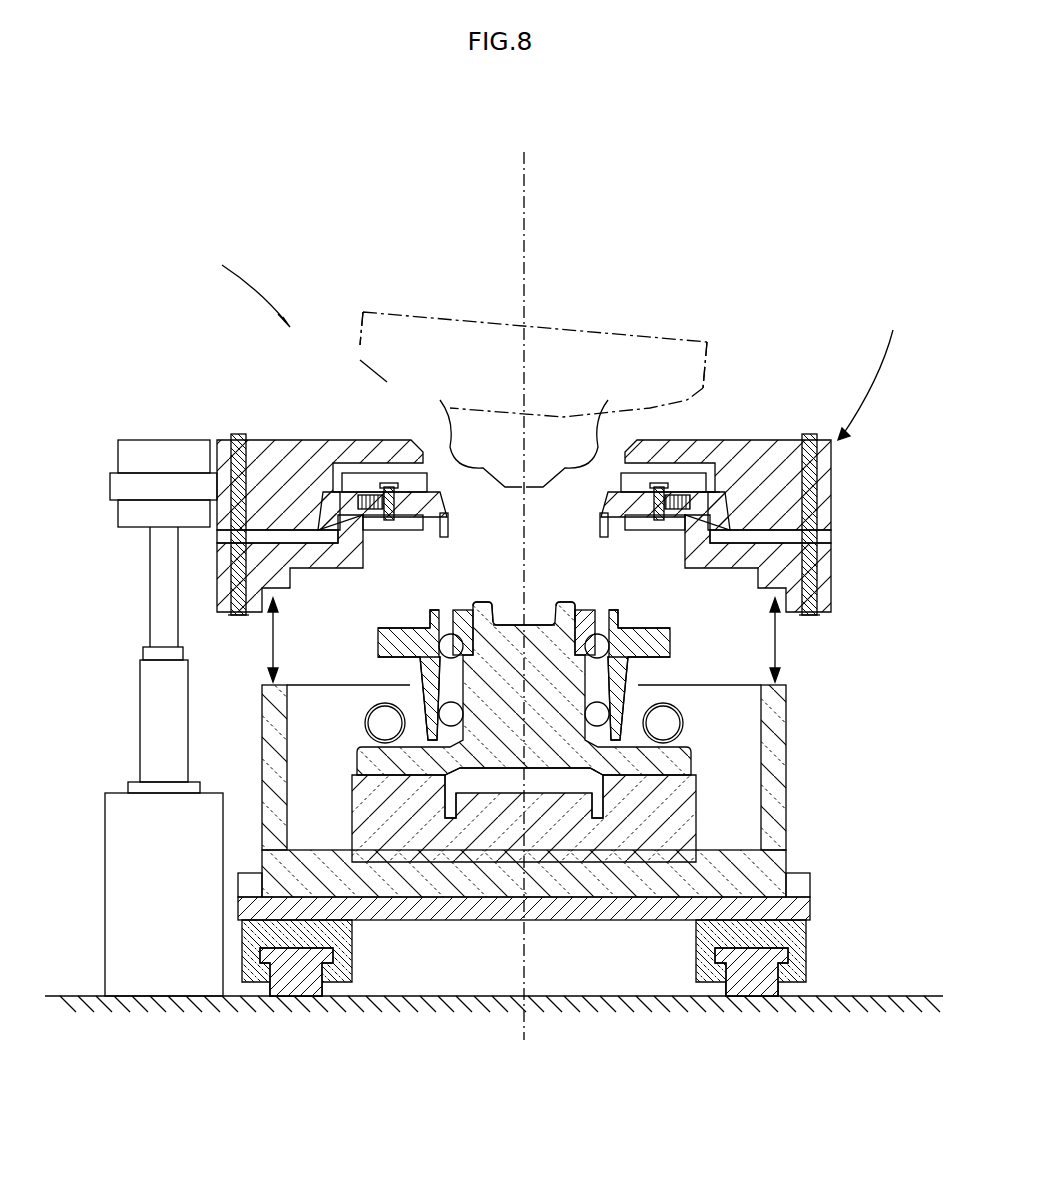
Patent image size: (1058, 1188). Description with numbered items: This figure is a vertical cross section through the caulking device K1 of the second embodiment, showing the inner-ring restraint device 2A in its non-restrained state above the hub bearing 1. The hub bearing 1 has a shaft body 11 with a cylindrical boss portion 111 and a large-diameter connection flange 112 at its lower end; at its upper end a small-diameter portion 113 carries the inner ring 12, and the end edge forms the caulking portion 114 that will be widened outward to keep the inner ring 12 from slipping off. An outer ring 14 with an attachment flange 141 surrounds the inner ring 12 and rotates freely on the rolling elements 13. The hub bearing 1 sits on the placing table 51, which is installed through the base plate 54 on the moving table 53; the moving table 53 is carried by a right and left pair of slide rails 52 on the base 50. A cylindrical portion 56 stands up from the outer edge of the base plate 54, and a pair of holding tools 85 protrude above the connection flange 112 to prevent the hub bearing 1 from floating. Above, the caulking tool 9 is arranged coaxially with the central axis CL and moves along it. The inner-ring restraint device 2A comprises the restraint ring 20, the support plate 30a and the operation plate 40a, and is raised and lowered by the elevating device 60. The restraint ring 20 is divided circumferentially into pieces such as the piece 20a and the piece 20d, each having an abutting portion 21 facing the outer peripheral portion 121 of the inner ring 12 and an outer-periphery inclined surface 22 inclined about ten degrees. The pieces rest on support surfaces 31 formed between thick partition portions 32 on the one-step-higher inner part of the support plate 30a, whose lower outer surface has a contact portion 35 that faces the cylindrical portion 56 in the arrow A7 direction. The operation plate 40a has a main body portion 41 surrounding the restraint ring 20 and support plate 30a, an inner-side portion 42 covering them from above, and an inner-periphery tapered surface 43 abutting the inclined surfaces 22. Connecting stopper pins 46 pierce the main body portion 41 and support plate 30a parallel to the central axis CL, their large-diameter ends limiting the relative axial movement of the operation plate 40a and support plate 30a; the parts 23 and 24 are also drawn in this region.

The hub bearing 1 is at (569, 682).
The inner-ring restraint device 2A is at (883, 374).
The caulking tool 9 is at (548, 330).
The shaft body 11 is at (536, 625).
The inner ring 12 is at (455, 609).
The rolling elements 13 is at (420, 668).
The outer ring 14 is at (426, 705).
The restraint ring 20 is at (533, 369).
The piece 20a is at (580, 470).
The piece 20d is at (468, 470).
The abutting portion 21 is at (452, 527).
The outer-periphery inclined surface 22 is at (215, 500).
The pressing member 23 is at (370, 497).
The clamp block 24 is at (348, 482).
The support plate 30a is at (215, 580).
The support surface 31 is at (385, 470).
The partition portion 32 is at (712, 482).
The contact portion 35 is at (238, 614).
The operation plate 40a is at (250, 440).
The main body portion 41 is at (262, 462).
The inner-side portion 42 is at (393, 480).
The inner-periphery tapered surface 43 is at (210, 470).
The connecting stopper pin 46 is at (222, 537).
The base 50 is at (905, 990).
The placing table 51 is at (355, 803).
The slide rail 52 is at (352, 950).
The moving table 53 is at (810, 890).
The base plate 54 is at (790, 862).
The cylindrical portion 56 is at (262, 688).
The elevating device 60 is at (140, 670).
The holding tool 85 is at (385, 723).
The boss portion 111 is at (600, 800).
The connection flange 112 is at (695, 765).
The small-diameter portion 113 is at (473, 603).
The caulking portion 114 is at (490, 602).
The outer peripheral portion 121 is at (432, 615).
The attachment flange 141 is at (378, 642).
The arrow direction A7 is at (521, 640).
The caulking device K1 is at (237, 286).
The central axis CL is at (523, 582).